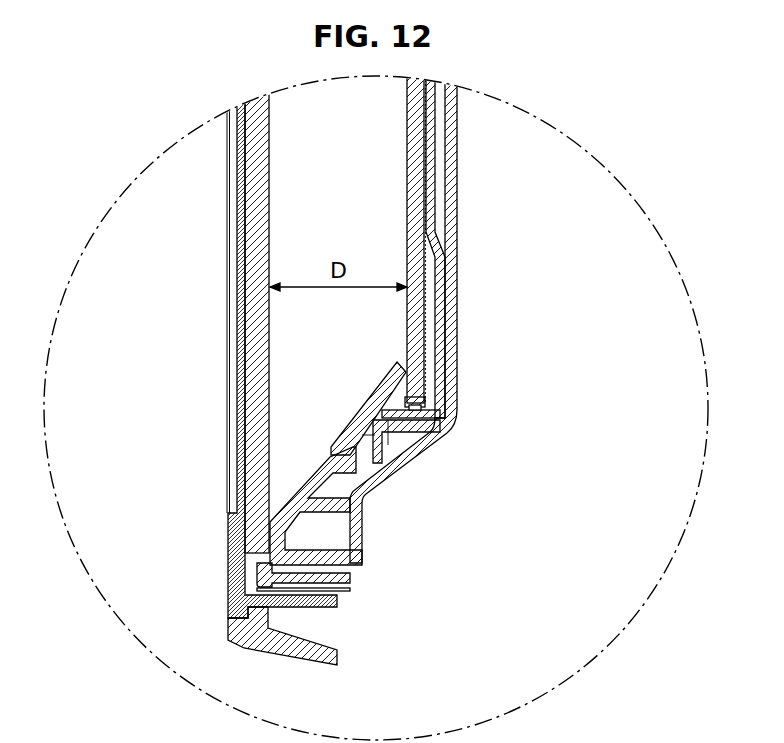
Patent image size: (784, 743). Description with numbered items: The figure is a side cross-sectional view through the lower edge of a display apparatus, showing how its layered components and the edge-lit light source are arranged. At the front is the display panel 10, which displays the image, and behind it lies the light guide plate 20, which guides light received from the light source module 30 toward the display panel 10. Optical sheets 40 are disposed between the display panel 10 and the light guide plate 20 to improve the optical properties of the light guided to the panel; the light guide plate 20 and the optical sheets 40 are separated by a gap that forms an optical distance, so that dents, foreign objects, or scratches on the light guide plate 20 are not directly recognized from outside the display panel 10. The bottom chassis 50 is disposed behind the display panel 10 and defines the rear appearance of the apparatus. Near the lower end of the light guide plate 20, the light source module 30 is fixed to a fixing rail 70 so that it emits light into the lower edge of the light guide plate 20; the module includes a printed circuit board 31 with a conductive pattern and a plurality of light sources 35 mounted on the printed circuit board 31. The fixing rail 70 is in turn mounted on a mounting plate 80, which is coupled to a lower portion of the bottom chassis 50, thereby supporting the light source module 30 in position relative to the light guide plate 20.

The display panel 10 is at (236, 230).
The light guide plate 20 is at (397, 185).
The light source module 30 is at (469, 404).
The printed circuit board 31 is at (420, 422).
The light sources 35 is at (427, 397).
The optical sheets 40 is at (274, 228).
The bottom chassis 50 is at (463, 188).
The fixing rail 70 is at (357, 413).
The mounting plate 80 is at (406, 434).